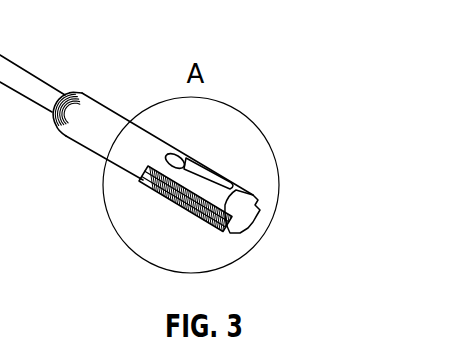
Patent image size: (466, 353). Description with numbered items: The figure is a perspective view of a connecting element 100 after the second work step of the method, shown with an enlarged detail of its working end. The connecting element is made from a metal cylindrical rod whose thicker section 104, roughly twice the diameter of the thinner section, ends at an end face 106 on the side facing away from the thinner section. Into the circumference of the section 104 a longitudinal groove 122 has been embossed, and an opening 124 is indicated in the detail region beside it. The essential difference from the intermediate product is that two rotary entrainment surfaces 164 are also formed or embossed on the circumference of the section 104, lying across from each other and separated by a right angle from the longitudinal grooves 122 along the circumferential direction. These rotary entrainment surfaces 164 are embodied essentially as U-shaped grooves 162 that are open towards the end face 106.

The connecting element 100 is at (106, 102).
The section 104 is at (84, 134).
The end face 106 is at (240, 216).
The longitudinal groove 122 is at (202, 173).
The eyelet / ring opening 124 is at (189, 162).
The U-shaped groove 162 is at (182, 203).
The rotary entrainment surface 164 is at (228, 228).